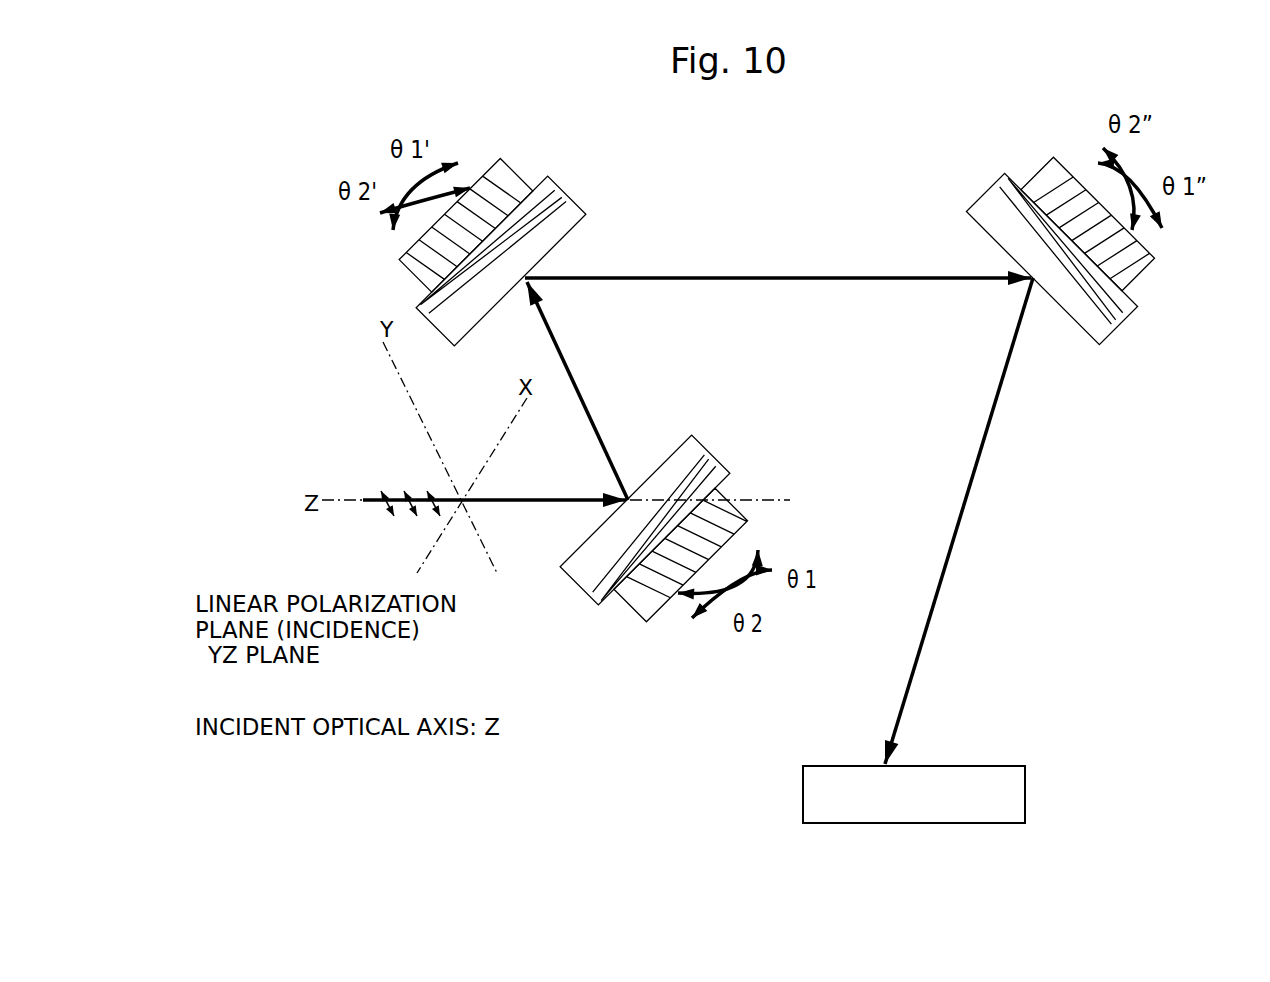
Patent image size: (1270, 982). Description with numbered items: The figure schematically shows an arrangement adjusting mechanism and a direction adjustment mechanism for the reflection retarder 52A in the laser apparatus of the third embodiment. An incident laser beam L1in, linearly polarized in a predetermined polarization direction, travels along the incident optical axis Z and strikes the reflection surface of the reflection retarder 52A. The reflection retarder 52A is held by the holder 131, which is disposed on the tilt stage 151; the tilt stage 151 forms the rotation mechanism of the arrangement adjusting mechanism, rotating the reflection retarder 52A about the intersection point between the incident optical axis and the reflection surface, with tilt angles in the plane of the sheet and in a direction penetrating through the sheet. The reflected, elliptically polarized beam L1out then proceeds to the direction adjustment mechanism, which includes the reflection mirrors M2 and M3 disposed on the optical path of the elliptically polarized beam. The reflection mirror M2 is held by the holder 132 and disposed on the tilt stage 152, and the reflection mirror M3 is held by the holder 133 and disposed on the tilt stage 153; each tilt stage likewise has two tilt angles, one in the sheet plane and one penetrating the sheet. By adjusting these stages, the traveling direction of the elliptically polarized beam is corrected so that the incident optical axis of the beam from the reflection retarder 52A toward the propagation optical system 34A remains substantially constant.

The tilt stage 152 is at (522, 172).
The holder 132 is at (563, 177).
The reflection mirror M2 is at (588, 200).
The holder 133 is at (993, 180).
The tilt stage 153 is at (1033, 168).
The reflection mirror M3 is at (972, 207).
The reflection retarder 52A is at (703, 437).
The holder 131 is at (725, 460).
The tilt stage 151 is at (747, 513).
The propagation optical system 34A is at (1027, 790).
The incident laser beam L1in is at (530, 505).
The outgoing laser beam L1out is at (580, 392).